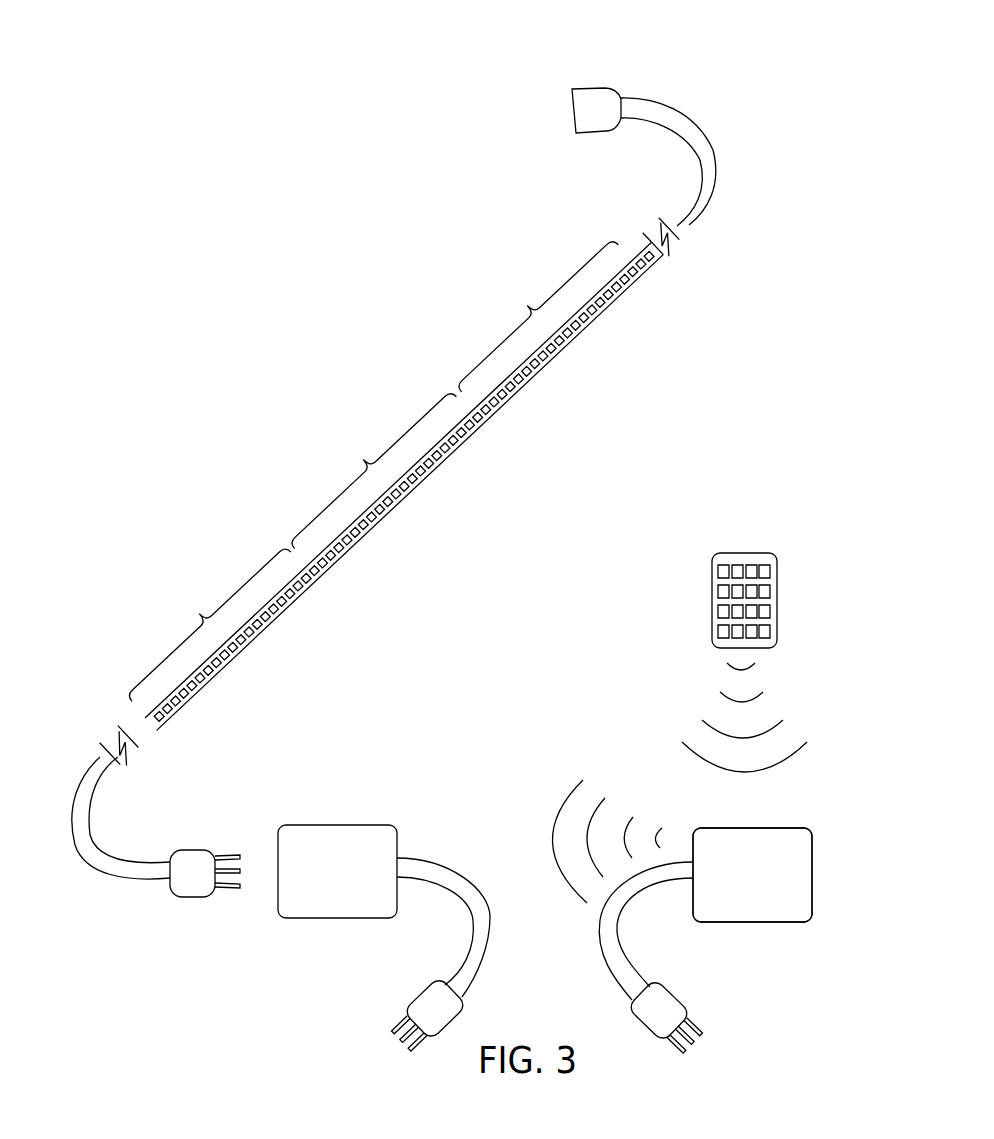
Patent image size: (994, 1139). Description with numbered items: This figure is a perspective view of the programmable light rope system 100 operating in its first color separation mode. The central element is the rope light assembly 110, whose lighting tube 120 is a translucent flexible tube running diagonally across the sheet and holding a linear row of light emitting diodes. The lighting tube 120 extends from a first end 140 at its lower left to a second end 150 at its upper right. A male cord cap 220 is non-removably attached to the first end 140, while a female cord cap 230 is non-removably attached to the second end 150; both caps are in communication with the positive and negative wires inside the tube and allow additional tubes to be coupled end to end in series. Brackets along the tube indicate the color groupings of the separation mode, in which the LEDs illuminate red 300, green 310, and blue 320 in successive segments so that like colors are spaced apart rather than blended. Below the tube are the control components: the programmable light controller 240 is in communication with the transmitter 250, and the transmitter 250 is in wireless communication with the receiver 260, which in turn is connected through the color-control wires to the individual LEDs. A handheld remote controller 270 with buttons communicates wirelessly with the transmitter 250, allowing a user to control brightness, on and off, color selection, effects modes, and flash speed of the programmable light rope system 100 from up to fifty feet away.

The programmable light rope system 100 is at (329, 160).
The rope light assembly 110 is at (283, 212).
The lighting tube 120 is at (413, 487).
The first end 140 is at (110, 775).
The second end 150 is at (703, 210).
The male cord cap 220 is at (195, 850).
The female cord cap 230 is at (589, 88).
The programmable light controller 240 is at (737, 885).
The transmitter 250 is at (762, 828).
The receiver 260 is at (342, 825).
The remote controller 270 is at (712, 593).
The red 300 is at (199, 611).
The green 310 is at (365, 459).
The blue 320 is at (528, 301).